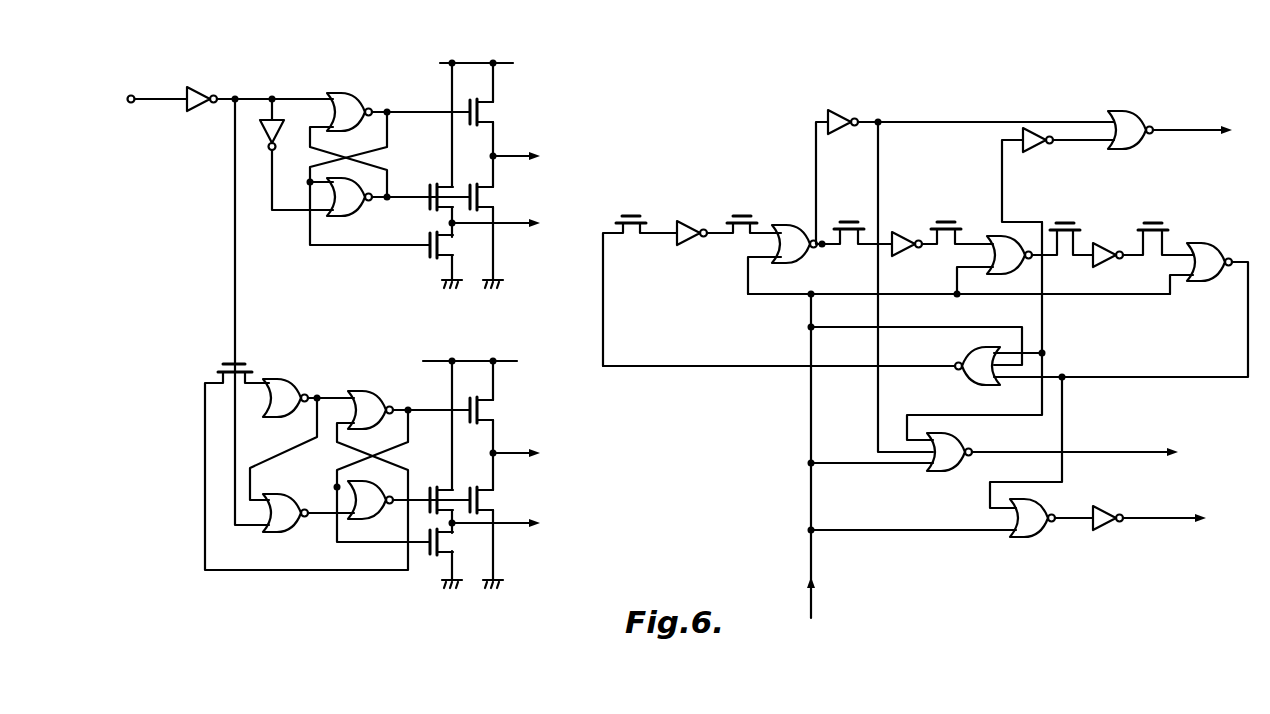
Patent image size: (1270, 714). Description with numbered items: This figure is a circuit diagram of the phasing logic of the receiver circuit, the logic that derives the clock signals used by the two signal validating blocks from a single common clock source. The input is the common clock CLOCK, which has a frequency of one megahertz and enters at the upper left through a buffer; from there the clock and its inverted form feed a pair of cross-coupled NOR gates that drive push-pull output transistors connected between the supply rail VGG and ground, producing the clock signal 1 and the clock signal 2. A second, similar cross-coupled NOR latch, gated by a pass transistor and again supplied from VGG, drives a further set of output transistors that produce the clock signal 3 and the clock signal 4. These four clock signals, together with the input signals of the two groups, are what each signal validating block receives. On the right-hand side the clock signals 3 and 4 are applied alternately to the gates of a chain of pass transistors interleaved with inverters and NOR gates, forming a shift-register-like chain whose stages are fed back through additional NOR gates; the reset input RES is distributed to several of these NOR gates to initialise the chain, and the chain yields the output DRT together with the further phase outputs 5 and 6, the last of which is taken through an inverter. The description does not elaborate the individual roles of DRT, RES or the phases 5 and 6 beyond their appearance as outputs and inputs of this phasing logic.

The clock signal φ 1 is at (513, 224).
The clock signal φ 2 is at (534, 157).
The clock signal φ 3 is at (1153, 185).
The clock signal φ 4 is at (768, 344).
The clock signal φ 5 is at (1070, 452).
The clock signal φ 6 is at (1124, 518).
The common clock source CLOCK is at (231, 78).
The gate supply voltage VGG is at (451, 218).
The DRT output DRT is at (1170, 127).
The reset input RES is at (808, 468).